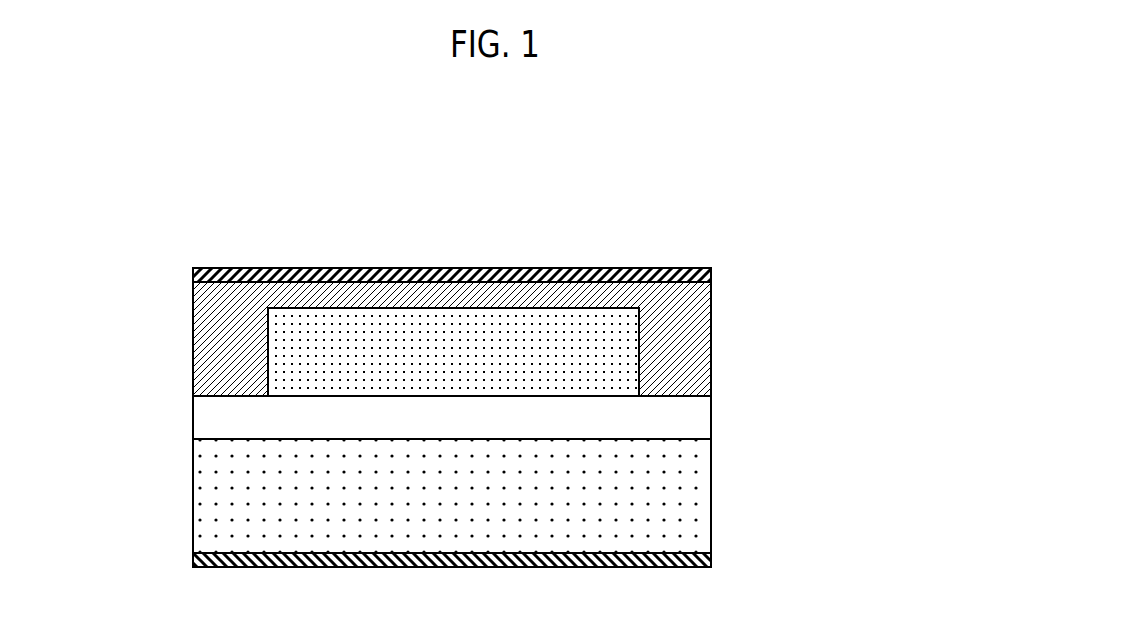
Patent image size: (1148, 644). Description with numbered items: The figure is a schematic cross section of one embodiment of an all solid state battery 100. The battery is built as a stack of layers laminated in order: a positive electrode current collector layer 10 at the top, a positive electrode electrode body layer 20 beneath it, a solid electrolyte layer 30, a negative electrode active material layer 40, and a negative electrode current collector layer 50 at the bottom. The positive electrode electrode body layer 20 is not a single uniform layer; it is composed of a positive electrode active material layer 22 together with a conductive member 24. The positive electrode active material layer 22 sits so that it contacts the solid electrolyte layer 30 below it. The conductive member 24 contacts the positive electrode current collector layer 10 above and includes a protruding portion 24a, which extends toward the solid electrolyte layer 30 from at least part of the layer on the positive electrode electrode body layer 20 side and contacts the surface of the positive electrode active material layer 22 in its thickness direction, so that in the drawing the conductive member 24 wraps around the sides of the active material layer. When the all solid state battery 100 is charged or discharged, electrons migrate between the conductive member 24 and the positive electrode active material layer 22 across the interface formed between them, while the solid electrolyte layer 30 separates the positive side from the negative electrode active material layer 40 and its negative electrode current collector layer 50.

The all solid state battery 100 is at (497, 336).
The positive electrode current collector layer 10 is at (192, 271).
The positive electrode electrode body layer 20 is at (452, 251).
The positive electrode active material layer 22 is at (462, 327).
The conductive member 24 is at (398, 292).
The protruding portion 24a is at (719, 310).
The solid electrolyte layer 30 is at (213, 418).
The negative electrode active material layer 40 is at (213, 504).
The negative electrode current collector layer 50 is at (193, 555).